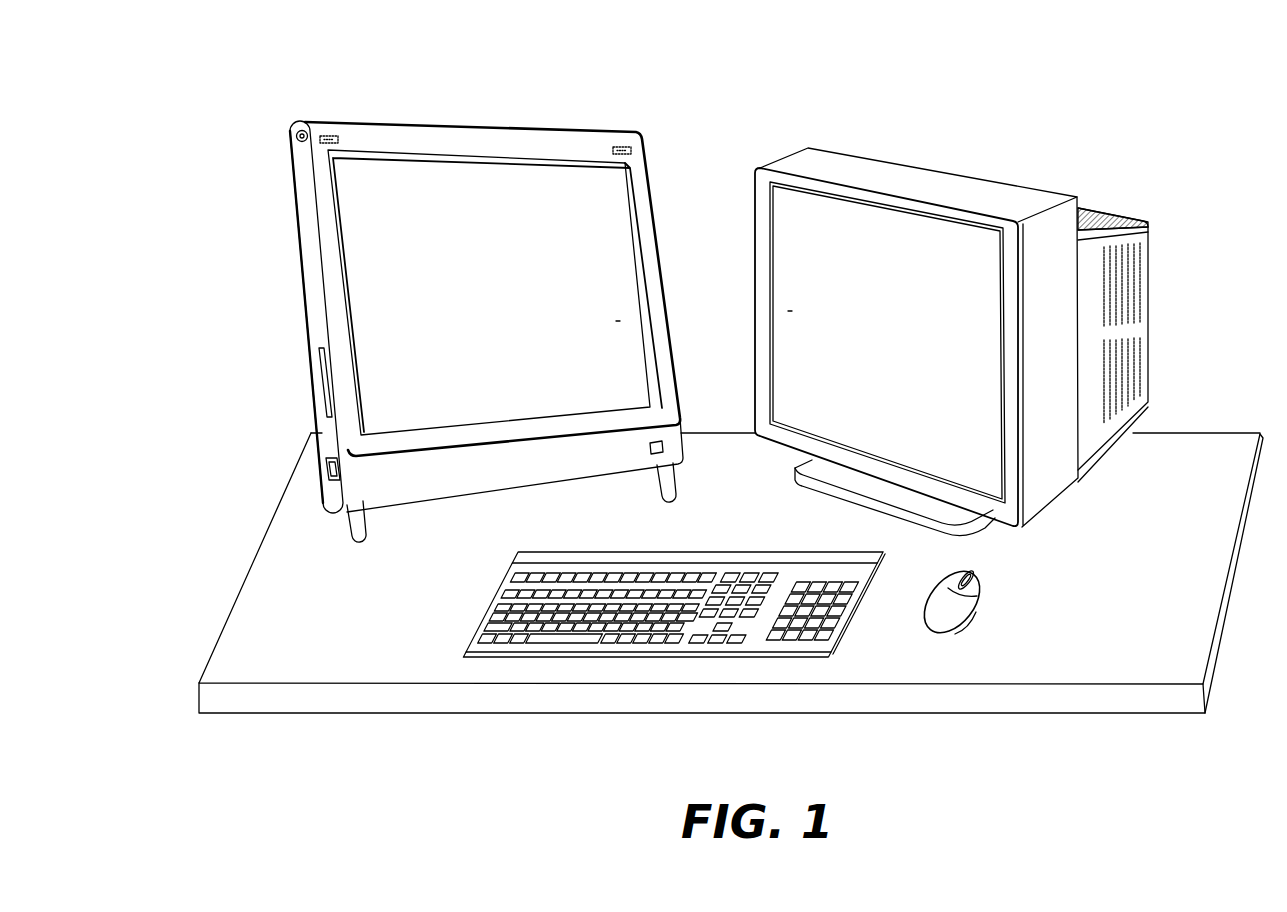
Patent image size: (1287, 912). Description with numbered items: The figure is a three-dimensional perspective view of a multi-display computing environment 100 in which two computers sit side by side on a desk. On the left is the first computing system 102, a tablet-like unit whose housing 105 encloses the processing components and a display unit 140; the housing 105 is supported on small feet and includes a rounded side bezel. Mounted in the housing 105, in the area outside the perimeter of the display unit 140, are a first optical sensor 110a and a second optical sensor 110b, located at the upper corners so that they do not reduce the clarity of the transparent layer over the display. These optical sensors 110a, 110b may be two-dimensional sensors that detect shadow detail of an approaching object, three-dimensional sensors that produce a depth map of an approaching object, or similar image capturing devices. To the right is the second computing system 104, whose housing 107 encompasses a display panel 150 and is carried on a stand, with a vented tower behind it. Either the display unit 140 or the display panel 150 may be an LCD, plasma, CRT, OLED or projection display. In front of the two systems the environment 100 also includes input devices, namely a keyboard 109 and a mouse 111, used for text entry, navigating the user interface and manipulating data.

The multi-display environment 100 is at (367, 50).
The first computing system 102 is at (286, 227).
The second computing system 104 is at (918, 151).
The housing 105 is at (292, 152).
The housing 107 is at (778, 156).
The keyboard 109 is at (497, 592).
The first optical sensor 110a is at (338, 140).
The second optical sensor 110b is at (614, 150).
The mouse 111 is at (928, 615).
The display unit 140 is at (637, 313).
The display panel 150 is at (777, 305).